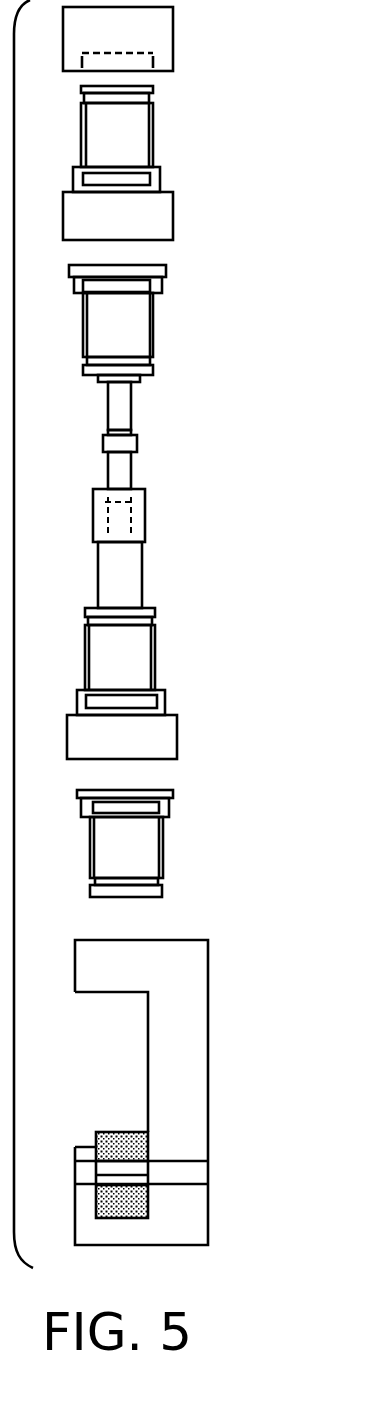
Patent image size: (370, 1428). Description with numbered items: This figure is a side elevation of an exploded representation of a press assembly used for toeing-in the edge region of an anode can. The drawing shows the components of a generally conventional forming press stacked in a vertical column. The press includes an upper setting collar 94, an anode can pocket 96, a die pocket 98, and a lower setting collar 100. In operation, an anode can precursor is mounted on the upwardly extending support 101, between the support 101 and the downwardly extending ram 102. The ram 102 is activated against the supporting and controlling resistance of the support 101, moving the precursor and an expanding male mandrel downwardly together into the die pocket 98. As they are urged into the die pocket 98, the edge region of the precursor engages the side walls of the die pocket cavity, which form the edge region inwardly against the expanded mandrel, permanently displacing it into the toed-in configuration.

The setting collar 94 is at (173, 62).
The anode can pocket 96 is at (137, 440).
The die pocket 98 is at (145, 498).
The setting collar 100 is at (177, 728).
The support 101 is at (142, 572).
The ram 102 is at (130, 405).